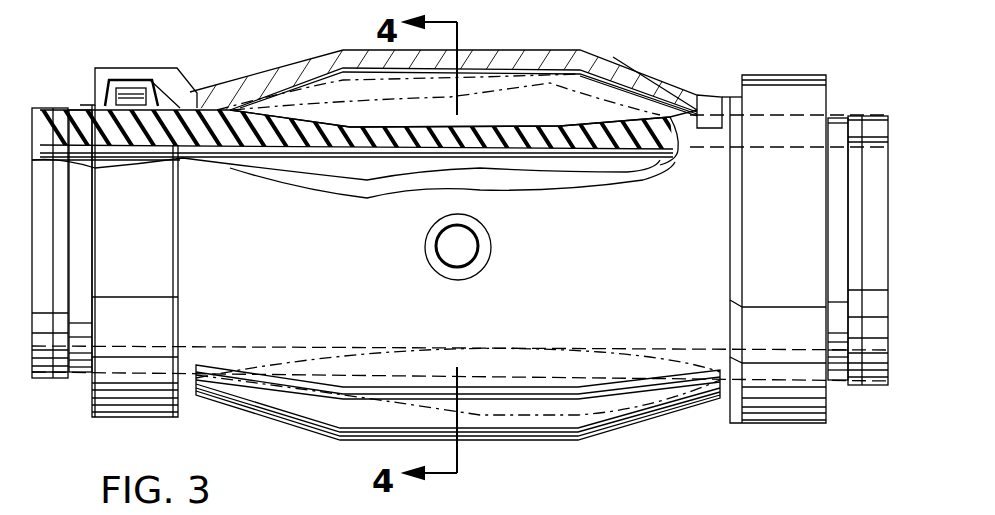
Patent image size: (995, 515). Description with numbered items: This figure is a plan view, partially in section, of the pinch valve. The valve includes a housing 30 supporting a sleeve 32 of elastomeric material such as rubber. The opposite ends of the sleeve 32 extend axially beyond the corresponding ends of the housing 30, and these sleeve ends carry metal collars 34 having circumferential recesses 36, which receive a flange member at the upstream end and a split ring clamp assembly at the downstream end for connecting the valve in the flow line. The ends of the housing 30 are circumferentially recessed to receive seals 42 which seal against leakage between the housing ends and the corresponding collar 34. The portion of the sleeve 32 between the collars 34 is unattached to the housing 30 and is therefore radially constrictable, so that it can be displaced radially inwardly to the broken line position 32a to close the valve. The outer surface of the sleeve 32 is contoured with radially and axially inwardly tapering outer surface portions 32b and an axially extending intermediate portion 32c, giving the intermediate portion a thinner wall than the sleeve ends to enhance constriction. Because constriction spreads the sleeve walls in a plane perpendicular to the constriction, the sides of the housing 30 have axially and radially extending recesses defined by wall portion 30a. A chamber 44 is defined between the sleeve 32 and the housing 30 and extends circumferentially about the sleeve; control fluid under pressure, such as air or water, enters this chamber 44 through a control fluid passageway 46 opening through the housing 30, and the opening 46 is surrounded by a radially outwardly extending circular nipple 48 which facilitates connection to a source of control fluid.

The housing 30 is at (237, 90).
The wall portion 30a is at (362, 55).
The sleeve 32 is at (192, 118).
The broken line position 32a is at (550, 95).
The tapering outer surface portions 32b is at (290, 117).
The intermediate portion 32c is at (490, 126).
The collar 34 is at (137, 115).
The circumferential recess 36 is at (80, 107).
The seal 42 is at (127, 80).
The chamber 44 is at (577, 78).
The control fluid passageway 46 is at (447, 253).
The nipple 48 is at (426, 231).